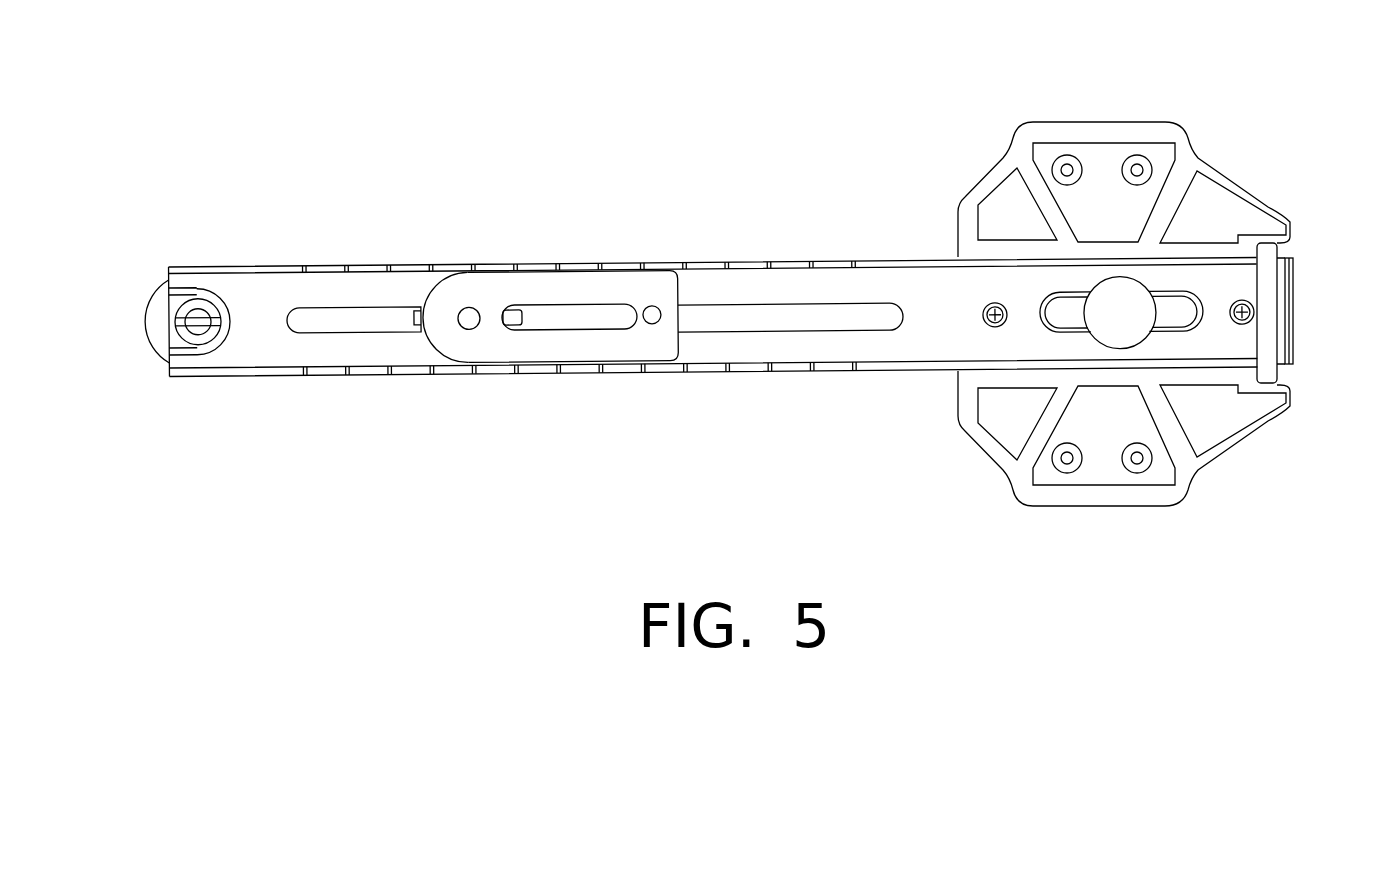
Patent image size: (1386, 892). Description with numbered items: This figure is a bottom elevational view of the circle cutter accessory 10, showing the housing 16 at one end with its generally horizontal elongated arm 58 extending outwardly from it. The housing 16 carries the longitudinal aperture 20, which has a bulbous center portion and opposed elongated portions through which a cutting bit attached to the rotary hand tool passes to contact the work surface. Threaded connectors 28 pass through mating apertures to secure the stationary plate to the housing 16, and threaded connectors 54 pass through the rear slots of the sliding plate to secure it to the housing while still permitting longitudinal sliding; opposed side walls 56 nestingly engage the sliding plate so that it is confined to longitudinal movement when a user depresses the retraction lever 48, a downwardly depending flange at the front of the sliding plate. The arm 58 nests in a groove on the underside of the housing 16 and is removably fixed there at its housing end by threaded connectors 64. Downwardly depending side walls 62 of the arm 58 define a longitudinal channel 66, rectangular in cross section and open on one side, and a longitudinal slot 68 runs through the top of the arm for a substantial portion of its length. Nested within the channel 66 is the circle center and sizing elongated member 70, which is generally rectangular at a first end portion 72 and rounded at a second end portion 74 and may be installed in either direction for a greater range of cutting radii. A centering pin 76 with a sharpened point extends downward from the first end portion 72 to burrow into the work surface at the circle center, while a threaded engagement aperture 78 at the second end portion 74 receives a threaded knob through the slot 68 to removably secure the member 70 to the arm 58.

The circle cutter accessory 10 is at (333, 112).
The housing 16 is at (992, 463).
The longitudinal aperture 20 is at (1133, 290).
The threaded connectors 28 is at (1137, 156).
The retraction lever 48 is at (1295, 345).
The threaded connectors 54 is at (1067, 156).
The side walls 56 is at (1095, 122).
The elongated arm 58 is at (680, 412).
The downwardly depending side walls 62 is at (880, 373).
The threaded connectors 64 is at (997, 300).
The longitudinal channel 66 is at (938, 336).
The longitudinal slot 68 is at (790, 317).
The circle center and sizing elongated member 70 is at (617, 287).
The first end portion 72 is at (683, 295).
The second end portion 74 is at (421, 297).
The centering pin 76 is at (652, 307).
The threaded engagement aperture 78 is at (472, 317).